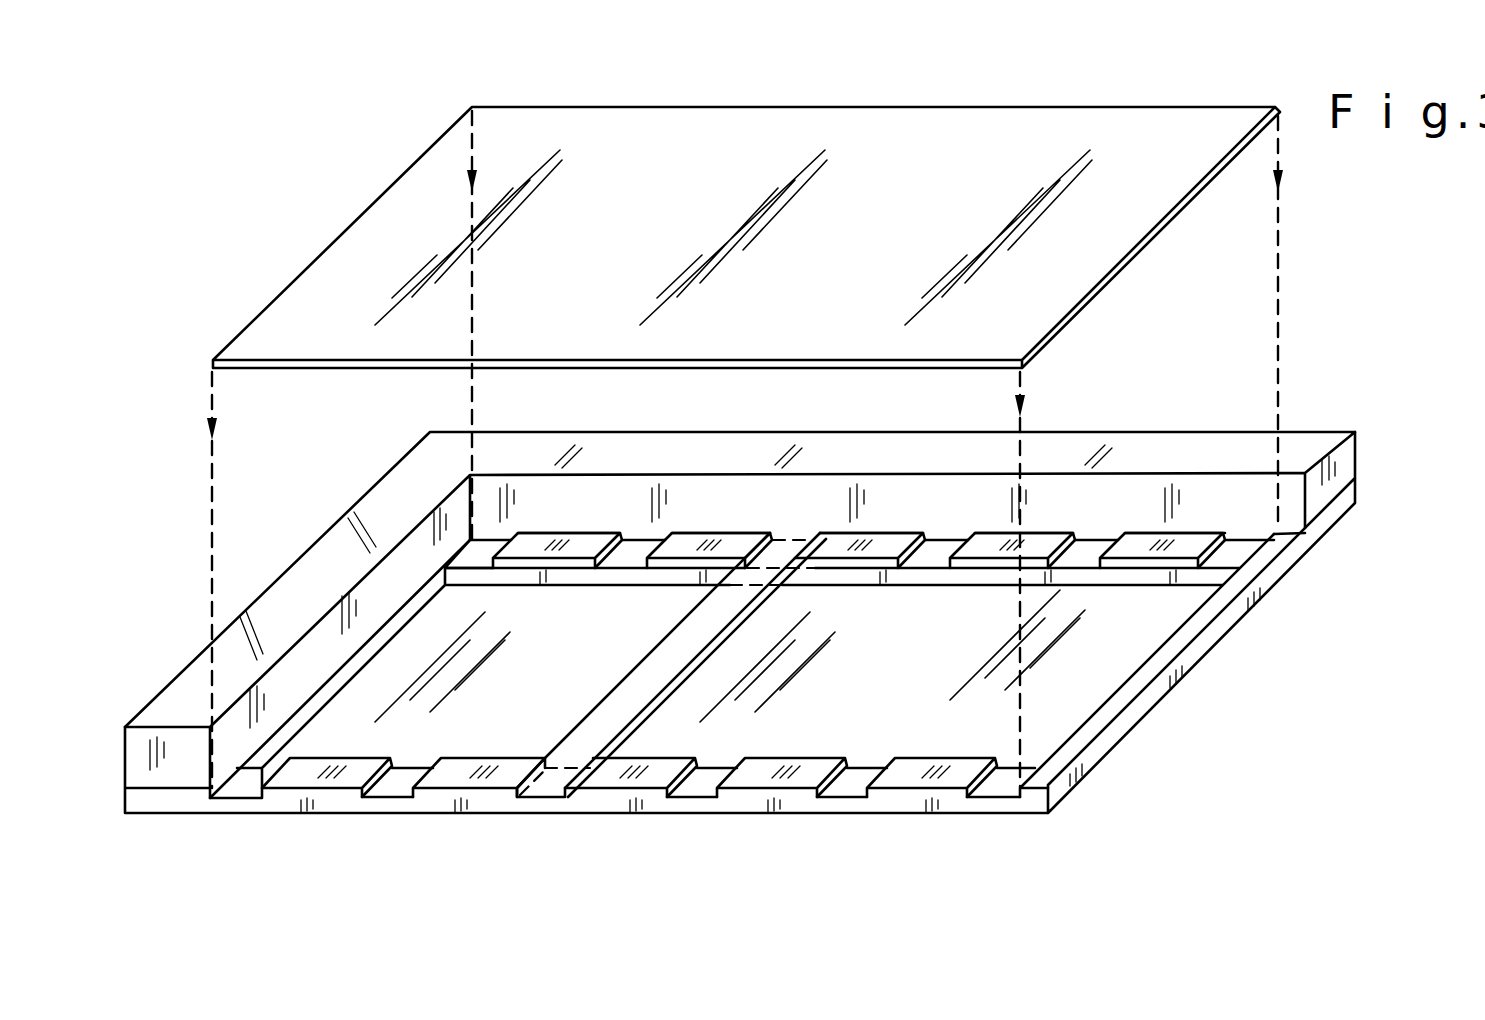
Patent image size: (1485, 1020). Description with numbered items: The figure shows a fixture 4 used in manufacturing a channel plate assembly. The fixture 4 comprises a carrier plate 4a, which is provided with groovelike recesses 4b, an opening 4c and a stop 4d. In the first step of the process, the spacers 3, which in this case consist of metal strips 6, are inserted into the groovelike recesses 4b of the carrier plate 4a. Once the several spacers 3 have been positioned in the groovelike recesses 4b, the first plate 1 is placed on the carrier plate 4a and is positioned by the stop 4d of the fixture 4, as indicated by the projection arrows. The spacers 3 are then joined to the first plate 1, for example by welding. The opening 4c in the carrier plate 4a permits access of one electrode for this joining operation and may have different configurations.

The first plate 1 is at (1049, 131).
The spacer 3 is at (577, 745).
The metal strip 6 is at (671, 701).
The fixture 4 is at (771, 662).
The carrier plate 4a is at (1048, 775).
The groovelike recess 4b is at (385, 790).
The opening 4c is at (1050, 688).
The stop 4d is at (367, 517).